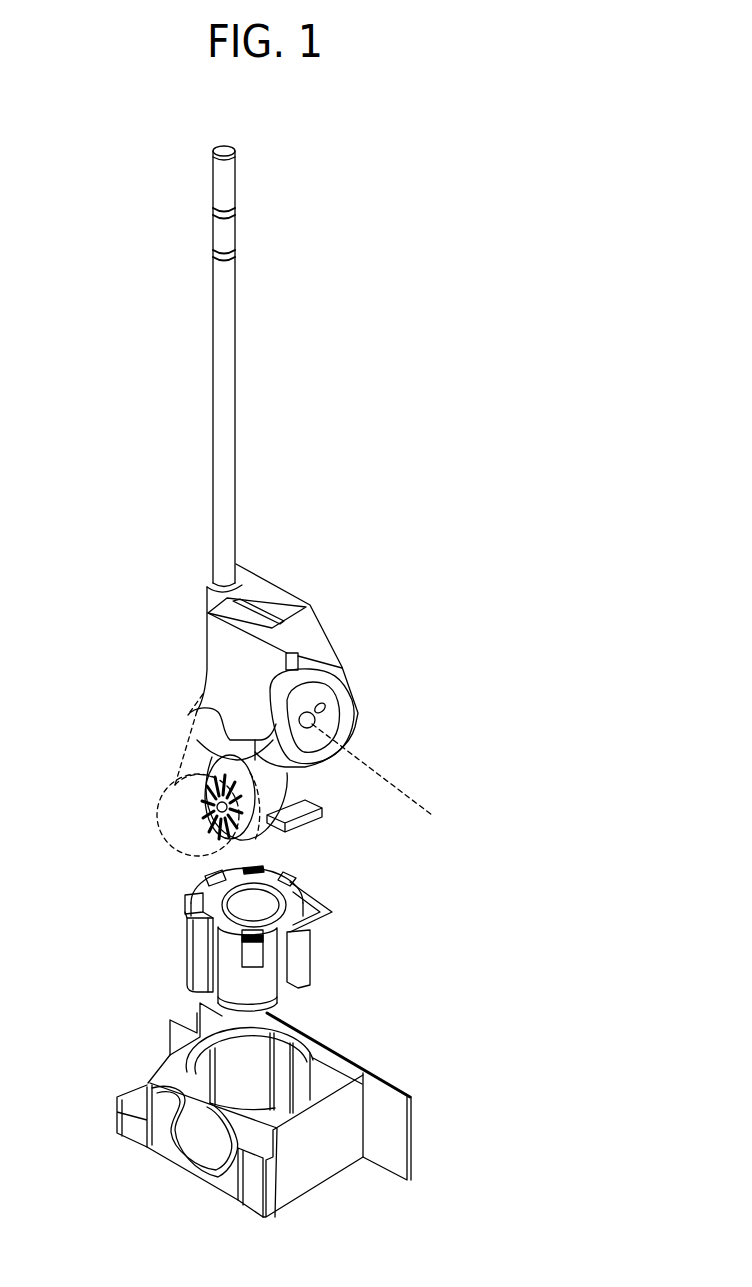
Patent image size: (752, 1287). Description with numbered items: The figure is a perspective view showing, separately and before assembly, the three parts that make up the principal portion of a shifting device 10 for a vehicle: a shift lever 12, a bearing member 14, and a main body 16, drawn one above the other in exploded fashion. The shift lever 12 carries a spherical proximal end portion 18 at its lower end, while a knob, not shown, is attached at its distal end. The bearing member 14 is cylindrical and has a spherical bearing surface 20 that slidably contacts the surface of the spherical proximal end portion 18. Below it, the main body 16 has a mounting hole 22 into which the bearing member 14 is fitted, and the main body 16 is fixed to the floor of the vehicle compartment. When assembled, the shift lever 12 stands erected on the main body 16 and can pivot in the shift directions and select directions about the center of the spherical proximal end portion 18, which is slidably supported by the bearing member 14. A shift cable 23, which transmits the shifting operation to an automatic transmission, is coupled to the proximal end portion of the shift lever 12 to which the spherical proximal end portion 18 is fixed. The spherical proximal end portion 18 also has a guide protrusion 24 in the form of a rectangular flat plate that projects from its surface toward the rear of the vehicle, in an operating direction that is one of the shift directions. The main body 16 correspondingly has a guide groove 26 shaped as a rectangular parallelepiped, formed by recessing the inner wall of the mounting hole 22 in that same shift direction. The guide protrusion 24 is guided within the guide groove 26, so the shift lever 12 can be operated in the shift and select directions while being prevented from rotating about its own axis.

The shifting device 10 is at (346, 181).
The shift lever 12 is at (167, 331).
The bearing member 14 is at (170, 909).
The main body 16 is at (138, 1008).
The spherical proximal end portion 18 is at (190, 756).
The spherical bearing surface 20 is at (290, 879).
The mounting hole 22 is at (278, 1046).
The shift cable 23 is at (378, 765).
The guide protrusion 24 is at (305, 800).
The guide groove 26 is at (318, 1085).